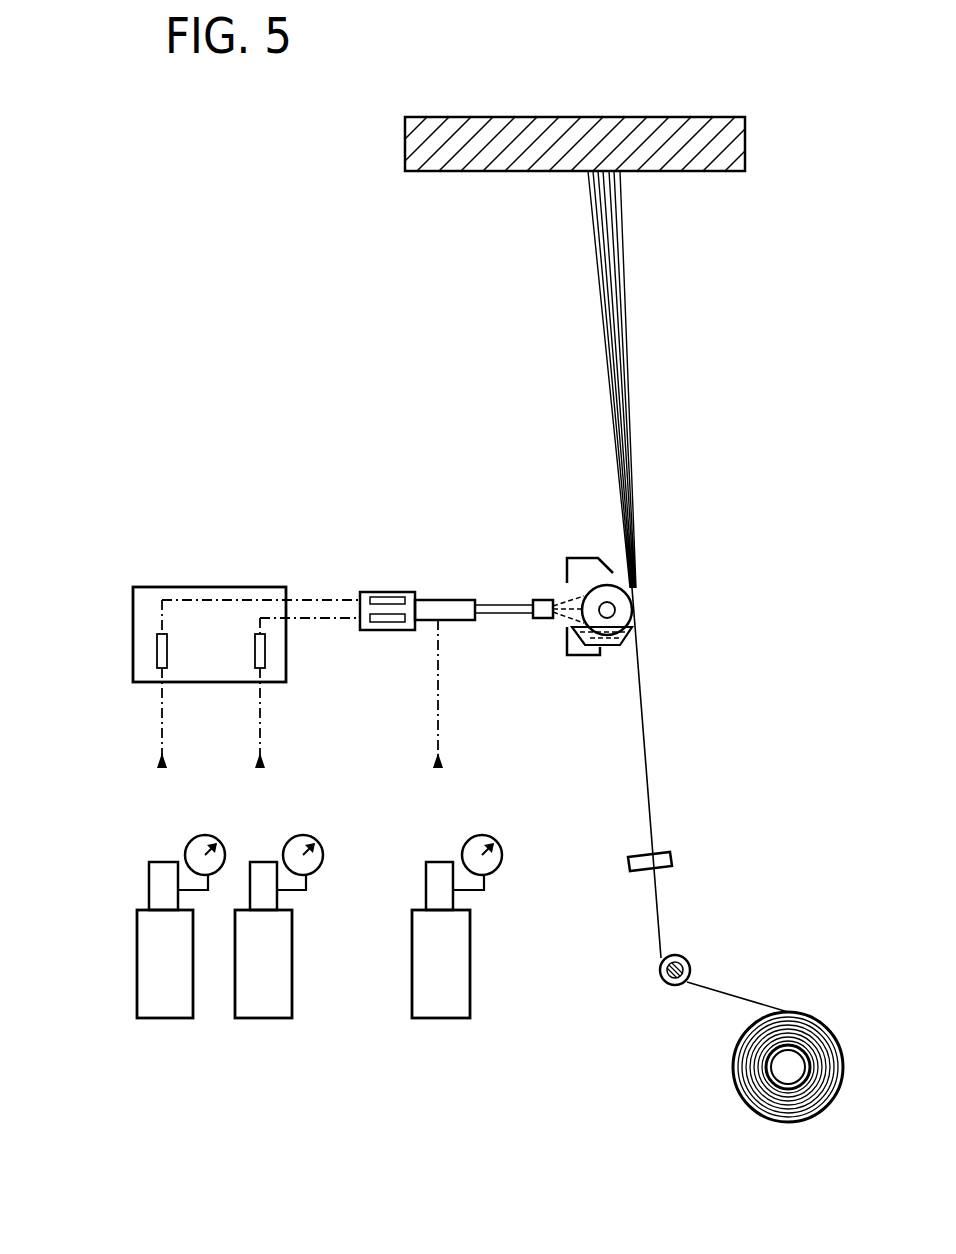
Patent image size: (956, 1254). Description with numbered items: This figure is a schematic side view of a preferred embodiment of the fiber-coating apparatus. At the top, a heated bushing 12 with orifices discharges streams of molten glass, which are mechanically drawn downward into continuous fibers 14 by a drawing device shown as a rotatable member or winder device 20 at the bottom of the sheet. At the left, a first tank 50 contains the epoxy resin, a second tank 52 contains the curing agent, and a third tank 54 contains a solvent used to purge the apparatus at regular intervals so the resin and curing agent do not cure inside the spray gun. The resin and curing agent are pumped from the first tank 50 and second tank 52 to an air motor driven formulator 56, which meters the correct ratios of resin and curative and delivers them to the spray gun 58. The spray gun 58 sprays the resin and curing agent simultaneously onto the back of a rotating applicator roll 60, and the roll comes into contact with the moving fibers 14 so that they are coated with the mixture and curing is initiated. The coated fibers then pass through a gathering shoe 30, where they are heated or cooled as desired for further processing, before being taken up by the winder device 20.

The heated bushing 12 is at (621, 118).
The continuous fibers 14 is at (595, 245).
The winder device 20 is at (716, 1072).
The gathering shoe 30 is at (672, 858).
The first tank 50 is at (138, 962).
The second tank 52 is at (283, 969).
The third tank 54 is at (462, 948).
The air motor driven formulator 56 is at (133, 606).
The spray gun 58 is at (445, 602).
The applicator roll 60 is at (618, 595).